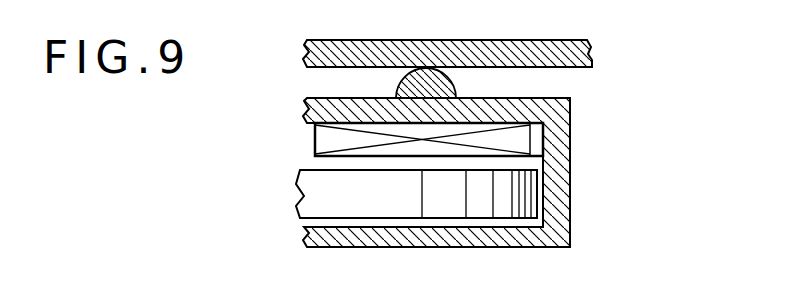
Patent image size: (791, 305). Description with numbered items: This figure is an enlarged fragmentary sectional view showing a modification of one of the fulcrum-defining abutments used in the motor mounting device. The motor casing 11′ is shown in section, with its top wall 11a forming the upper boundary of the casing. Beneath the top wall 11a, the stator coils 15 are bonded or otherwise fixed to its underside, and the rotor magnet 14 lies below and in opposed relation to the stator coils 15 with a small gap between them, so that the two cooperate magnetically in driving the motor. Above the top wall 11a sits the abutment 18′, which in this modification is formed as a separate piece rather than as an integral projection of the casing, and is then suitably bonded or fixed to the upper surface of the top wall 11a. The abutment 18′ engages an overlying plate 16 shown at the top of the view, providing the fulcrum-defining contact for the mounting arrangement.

The plate 16 is at (592, 57).
The motor casing 11′ is at (373, 245).
The top wall 11a is at (365, 107).
The abutment 18′ is at (452, 84).
The stator coils 15 is at (516, 143).
The rotor magnet 14 is at (516, 200).